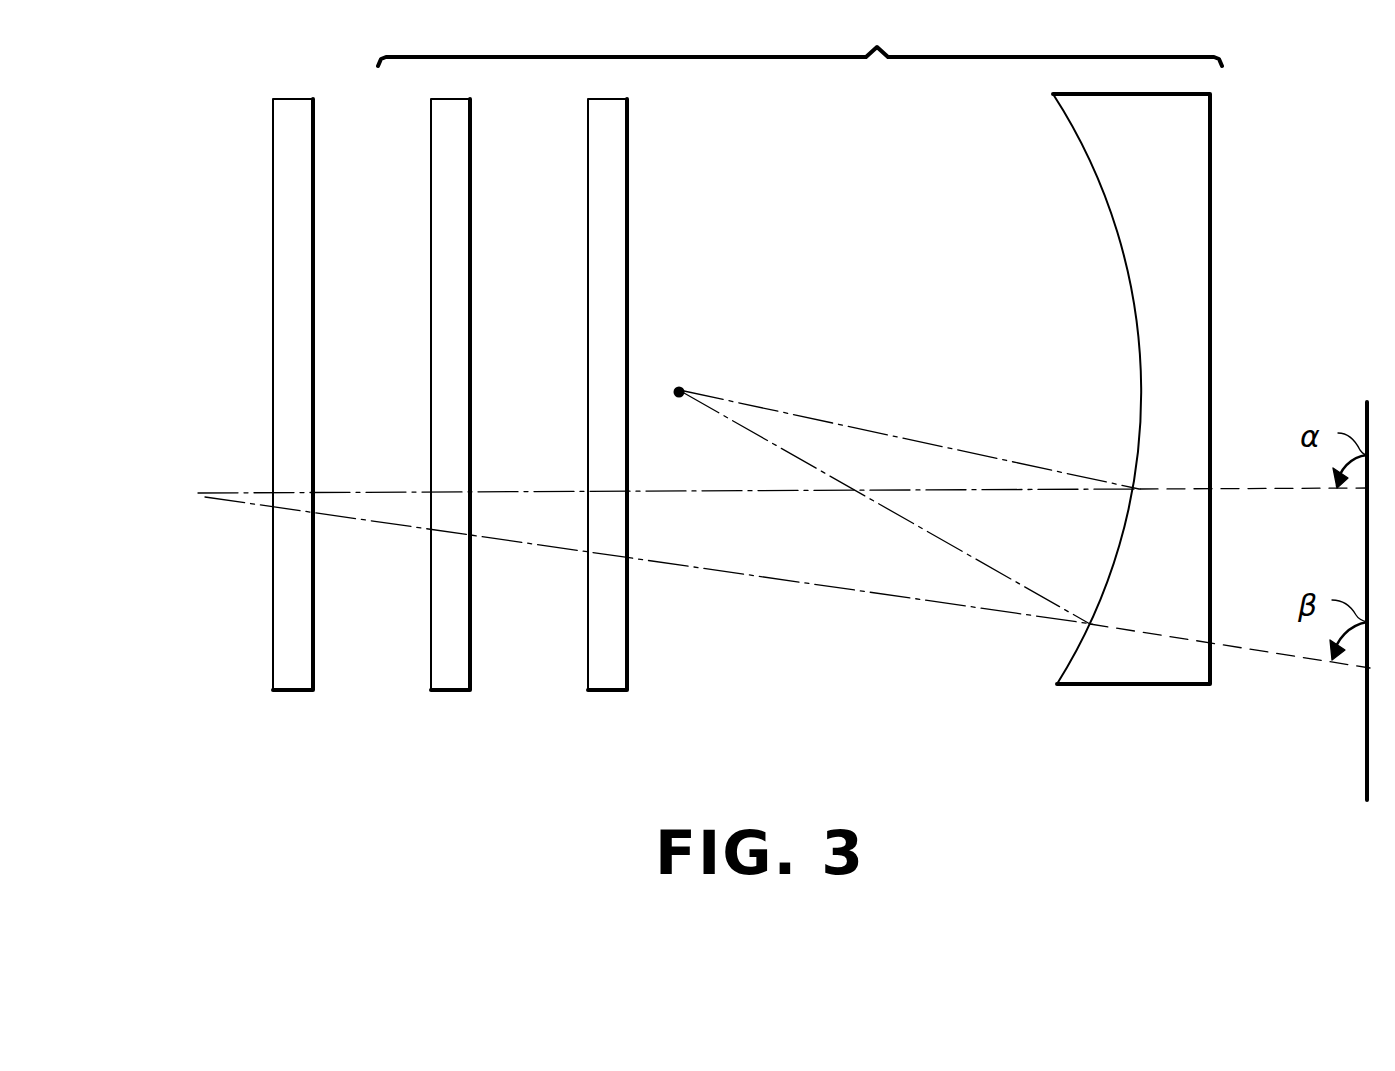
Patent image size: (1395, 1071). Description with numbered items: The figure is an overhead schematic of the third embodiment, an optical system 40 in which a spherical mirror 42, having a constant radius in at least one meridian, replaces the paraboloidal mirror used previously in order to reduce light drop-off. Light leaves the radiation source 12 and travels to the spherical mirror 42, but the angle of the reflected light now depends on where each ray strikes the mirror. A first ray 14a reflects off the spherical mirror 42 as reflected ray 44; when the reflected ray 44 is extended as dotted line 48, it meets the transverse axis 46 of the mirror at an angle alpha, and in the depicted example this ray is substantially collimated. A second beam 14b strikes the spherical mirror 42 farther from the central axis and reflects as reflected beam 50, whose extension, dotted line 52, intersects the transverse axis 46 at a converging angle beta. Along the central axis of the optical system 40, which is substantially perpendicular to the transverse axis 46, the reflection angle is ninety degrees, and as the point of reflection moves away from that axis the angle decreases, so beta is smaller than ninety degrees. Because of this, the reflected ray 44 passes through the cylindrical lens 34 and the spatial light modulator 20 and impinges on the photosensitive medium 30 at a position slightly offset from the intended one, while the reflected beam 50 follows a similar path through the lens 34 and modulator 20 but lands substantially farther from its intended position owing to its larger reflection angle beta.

The radiation source 12 is at (680, 389).
The first ray 14a is at (905, 390).
The beam 14b is at (958, 548).
The spatial light modulator 20 is at (461, 676).
The photosensitive medium 30 is at (303, 676).
The cylindrical lens 34 is at (618, 672).
The optical system 40 is at (800, 41).
The spherical mirror 42 is at (1202, 131).
The reflected ray 44 is at (975, 492).
The transverse axis 46 is at (1365, 410).
The dotted line 48 is at (1243, 490).
The reflected beam 50 is at (852, 590).
The dotted line 52 is at (1283, 655).